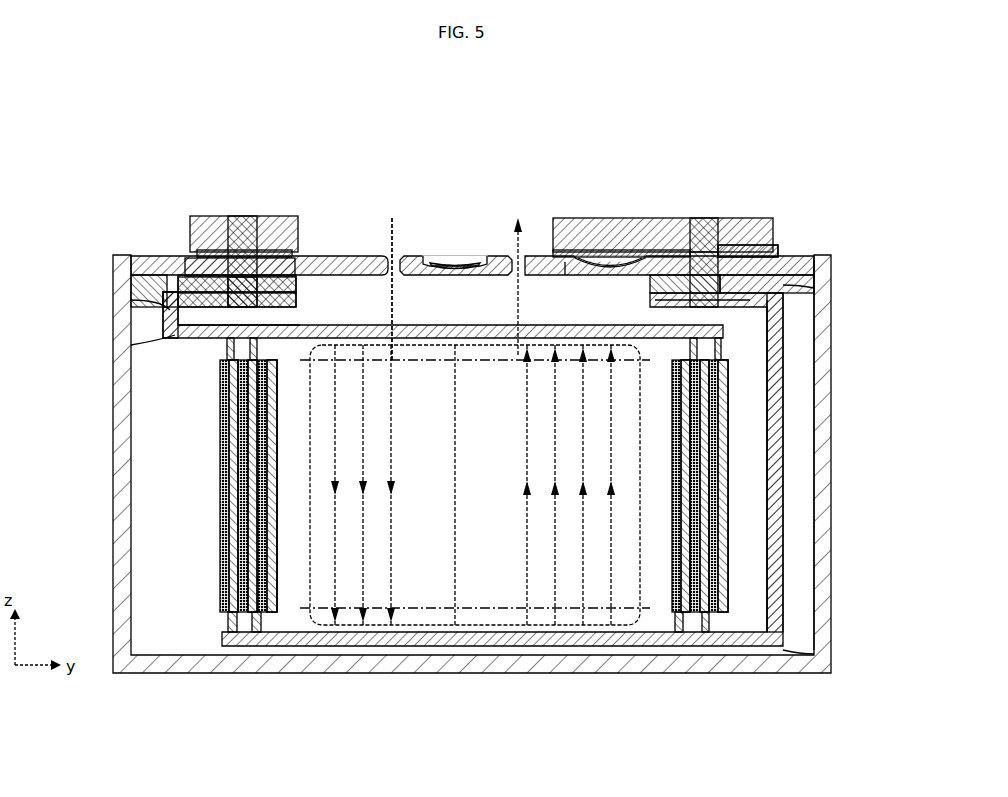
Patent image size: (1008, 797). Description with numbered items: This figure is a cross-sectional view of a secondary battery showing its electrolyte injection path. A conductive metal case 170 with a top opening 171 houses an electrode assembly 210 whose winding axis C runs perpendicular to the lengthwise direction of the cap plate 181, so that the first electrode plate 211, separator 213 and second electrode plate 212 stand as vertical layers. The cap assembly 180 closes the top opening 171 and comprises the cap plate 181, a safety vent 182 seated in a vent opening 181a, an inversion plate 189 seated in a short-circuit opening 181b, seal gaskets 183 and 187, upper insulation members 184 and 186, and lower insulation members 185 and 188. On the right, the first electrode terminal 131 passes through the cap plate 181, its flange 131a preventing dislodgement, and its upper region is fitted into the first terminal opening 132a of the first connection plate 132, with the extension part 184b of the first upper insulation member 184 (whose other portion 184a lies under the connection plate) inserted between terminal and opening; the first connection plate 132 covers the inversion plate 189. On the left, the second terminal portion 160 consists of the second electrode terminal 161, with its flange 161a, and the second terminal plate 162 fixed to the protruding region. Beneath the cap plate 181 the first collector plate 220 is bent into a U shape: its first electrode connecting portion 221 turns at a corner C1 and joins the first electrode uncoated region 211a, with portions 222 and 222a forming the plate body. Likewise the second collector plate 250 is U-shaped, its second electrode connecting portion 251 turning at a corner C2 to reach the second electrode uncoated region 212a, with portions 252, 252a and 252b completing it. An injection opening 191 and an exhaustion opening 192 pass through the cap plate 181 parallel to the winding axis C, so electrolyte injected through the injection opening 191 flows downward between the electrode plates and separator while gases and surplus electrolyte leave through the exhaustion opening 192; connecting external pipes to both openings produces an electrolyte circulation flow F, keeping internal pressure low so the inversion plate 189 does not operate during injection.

The second terminal portion 160 is at (273, 225).
The second electrode terminal 161 is at (250, 226).
The flange 161a is at (280, 286).
The second terminal plate 162 is at (215, 216).
The case 170 is at (835, 593).
The top opening 171 is at (185, 268).
The cap assembly 180 is at (472, 248).
The cap plate 181 is at (345, 256).
The vent opening 181a is at (440, 274).
The short-circuit opening 181b is at (572, 276).
The safety vent 182 is at (466, 262).
The first seal gasket 183 is at (700, 280).
The first upper insulation member 184 is at (770, 246).
The first upper insulation member portion 184a is at (612, 252).
The extension part 184b is at (735, 248).
The first lower insulation member 185 is at (800, 284).
The second upper insulation member 186 is at (200, 250).
The second seal gasket 187 is at (200, 268).
The second lower insulation member 188 is at (135, 290).
The inversion plate 189 is at (607, 266).
The injection opening 191 is at (388, 260).
The exhaustion opening 192 is at (520, 262).
The first electrode terminal 131 is at (706, 222).
The flange 131a is at (685, 296).
The first connection plate 132 is at (560, 218).
The first terminal opening 132a is at (697, 255).
The electrode assembly 210 is at (398, 534).
The first electrode plate 211 is at (699, 534).
The first electrode uncoated region 211a is at (710, 622).
The second electrode plate 212 is at (158, 534).
The second electrode uncoated region 212a is at (232, 360).
The separator 213 is at (278, 590).
The first collector plate 220 is at (788, 443).
The first electrode connecting portion 221 is at (770, 520).
The current collector plate 222 is at (569, 442).
The current collector vertical portion 222a is at (776, 318).
The second collector plate 250 is at (381, 345).
The second electrode connecting portion 251 is at (195, 338).
The current collector plate 252 is at (170, 285).
The current collector portion 252a is at (175, 343).
The current collector portion 252b is at (175, 290).
The winding axis C is at (456, 486).
The corner C1 is at (790, 290).
The corner C2 is at (131, 345).
The electrolyte circulation flow F is at (394, 232).